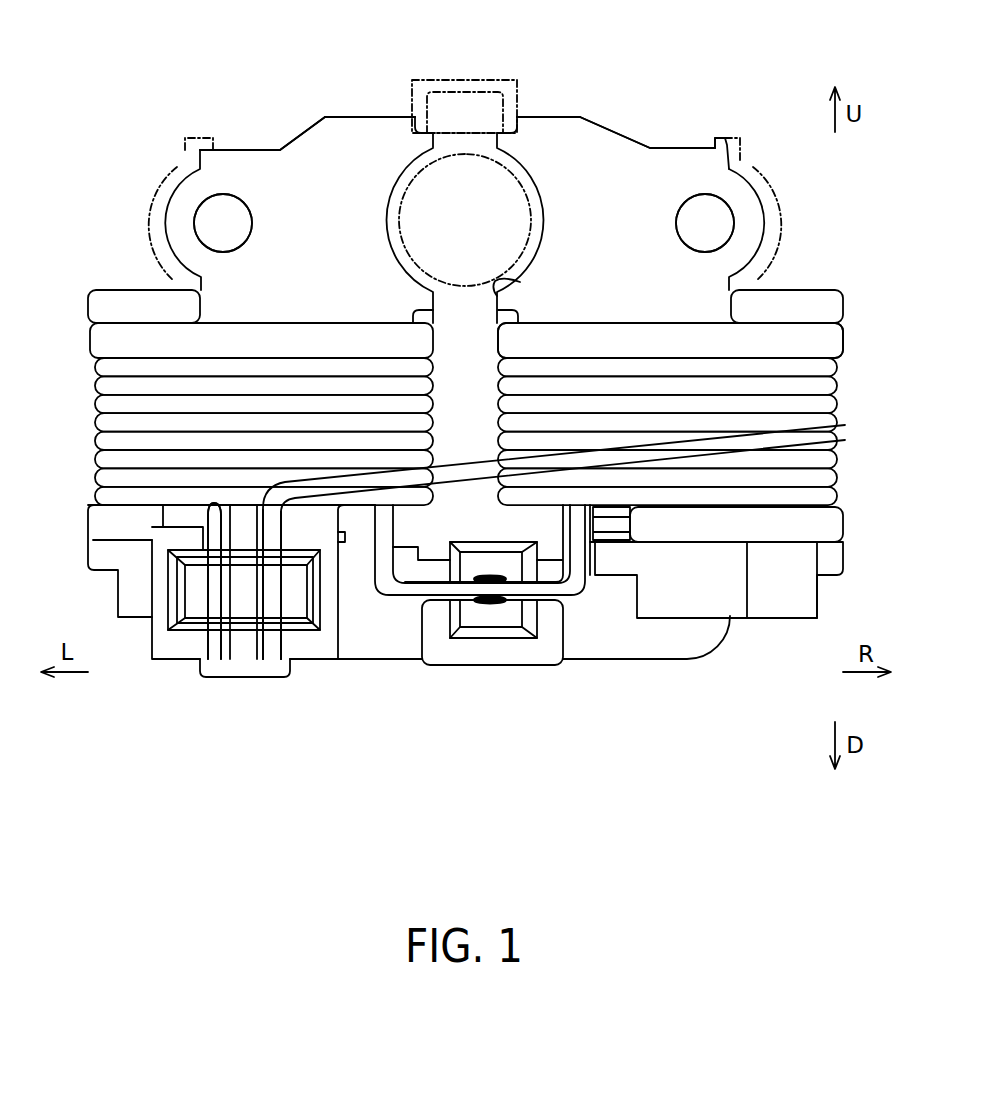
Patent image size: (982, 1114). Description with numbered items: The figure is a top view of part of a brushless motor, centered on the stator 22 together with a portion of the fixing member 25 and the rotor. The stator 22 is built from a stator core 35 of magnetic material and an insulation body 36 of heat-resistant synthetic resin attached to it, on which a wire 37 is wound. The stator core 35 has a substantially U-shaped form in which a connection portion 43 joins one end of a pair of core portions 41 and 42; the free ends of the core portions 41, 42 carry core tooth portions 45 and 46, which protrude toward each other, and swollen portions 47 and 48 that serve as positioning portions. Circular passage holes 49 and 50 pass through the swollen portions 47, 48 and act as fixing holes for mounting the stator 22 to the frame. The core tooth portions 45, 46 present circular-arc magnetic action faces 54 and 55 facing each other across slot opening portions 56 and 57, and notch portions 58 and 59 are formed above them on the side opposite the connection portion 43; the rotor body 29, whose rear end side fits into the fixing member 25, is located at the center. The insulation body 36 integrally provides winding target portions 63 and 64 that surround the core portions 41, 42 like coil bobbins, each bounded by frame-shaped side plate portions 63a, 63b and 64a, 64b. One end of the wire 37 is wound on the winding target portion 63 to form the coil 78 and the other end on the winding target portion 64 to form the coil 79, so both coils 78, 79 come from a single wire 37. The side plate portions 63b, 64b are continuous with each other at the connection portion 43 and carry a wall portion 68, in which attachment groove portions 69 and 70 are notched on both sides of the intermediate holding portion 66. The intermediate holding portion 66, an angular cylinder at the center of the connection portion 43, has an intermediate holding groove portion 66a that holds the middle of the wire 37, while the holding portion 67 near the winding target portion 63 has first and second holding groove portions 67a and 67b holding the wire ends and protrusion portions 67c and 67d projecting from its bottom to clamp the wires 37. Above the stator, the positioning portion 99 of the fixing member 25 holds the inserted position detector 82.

The stator 22 is at (661, 83).
The fixing member 25 is at (777, 228).
The rotor body 29 is at (515, 177).
The stator core 35 is at (723, 138).
The insulation body 36 is at (847, 347).
The wire 37 is at (833, 442).
The one core portion 41 is at (327, 167).
The other core portion 42 is at (610, 167).
The connection portion 43 is at (655, 653).
The one core tooth portion 45 is at (377, 125).
The other core tooth portion 46 is at (553, 123).
The swollen portion 47 is at (175, 220).
The swollen portion 48 is at (753, 220).
The passage hole 49 is at (195, 205).
The passage hole 50 is at (727, 195).
The magnetic action face 54 is at (387, 217).
The magnetic action face 55 is at (540, 212).
The slot opening portion 56 is at (490, 137).
The slot opening portion 57 is at (520, 280).
The notch portion 58 is at (420, 88).
The notch portion 59 is at (508, 92).
The one winding target portion 63 is at (97, 348).
The side plate portion 63a is at (128, 323).
The side plate portion 63b is at (102, 567).
The other winding target portion 64 is at (820, 337).
The side plate portion 64a is at (800, 323).
The side plate portion 64b is at (788, 538).
The intermediate holding portion 66 is at (488, 652).
The intermediate holding groove portion 66a is at (548, 617).
The holding portion 67 is at (158, 650).
The first holding groove portion 67a is at (219, 580).
The second holding groove portion 67b is at (268, 585).
The protrusion portion 67c is at (205, 585).
The protrusion portion 67d is at (287, 592).
The wall portion 68 is at (755, 537).
The attachment groove portion 69 is at (367, 535).
The attachment groove portion 70 is at (593, 573).
The one coil 78 is at (97, 423).
The other coil 79 is at (837, 423).
The position detector 82 is at (445, 90).
The positioning portion 99 is at (468, 78).